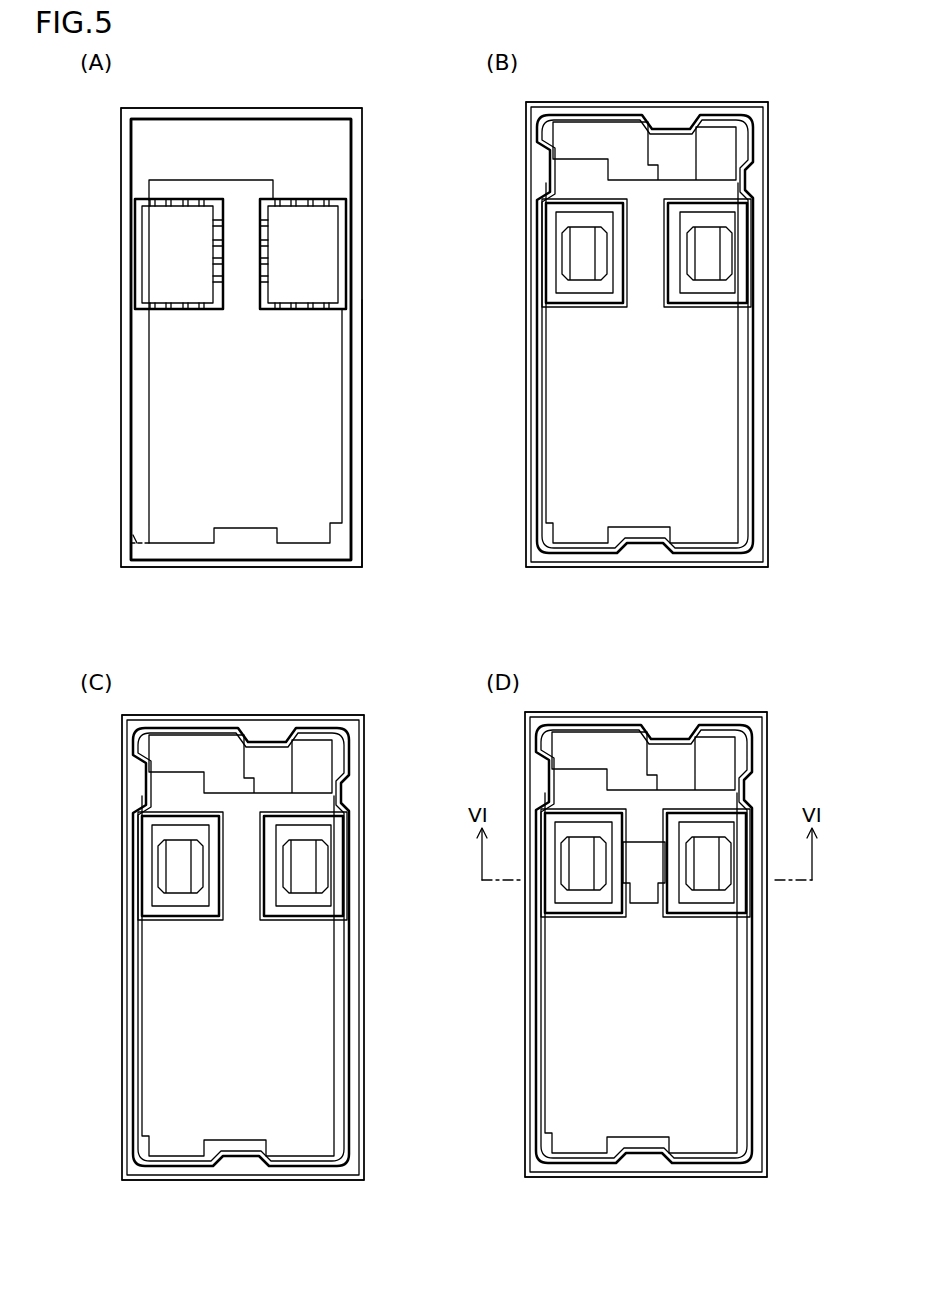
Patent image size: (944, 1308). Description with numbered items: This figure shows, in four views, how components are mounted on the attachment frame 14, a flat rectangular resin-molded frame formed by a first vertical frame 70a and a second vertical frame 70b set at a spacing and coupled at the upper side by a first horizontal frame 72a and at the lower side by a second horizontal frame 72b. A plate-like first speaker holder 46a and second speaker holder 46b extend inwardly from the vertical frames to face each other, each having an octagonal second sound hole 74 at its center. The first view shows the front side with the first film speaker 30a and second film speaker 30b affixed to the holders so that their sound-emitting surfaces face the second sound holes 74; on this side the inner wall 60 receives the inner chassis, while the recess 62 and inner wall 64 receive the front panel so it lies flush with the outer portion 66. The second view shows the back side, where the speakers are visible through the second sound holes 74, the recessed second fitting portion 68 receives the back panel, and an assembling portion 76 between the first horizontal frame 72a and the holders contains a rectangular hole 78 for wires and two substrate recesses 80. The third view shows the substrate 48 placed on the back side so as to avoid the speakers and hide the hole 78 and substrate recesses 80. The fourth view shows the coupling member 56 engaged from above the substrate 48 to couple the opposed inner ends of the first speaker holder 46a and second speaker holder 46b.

The attachment frame 14 is at (161, 97).
The first film speaker 30a is at (438, 595).
The second film speaker 30b is at (278, 289).
The first speaker holder 46a is at (212, 312).
The second speaker holder 46b is at (323, 311).
The substrate 48 is at (188, 372).
The coupling member 56 is at (644, 932).
The inner wall 60 is at (135, 502).
The recess 62 is at (353, 458).
The inner wall 64 is at (151, 544).
The portion 66 is at (357, 485).
The second fitting portion 68 is at (239, 393).
The first vertical frame 70a is at (122, 377).
The second vertical frame 70b is at (360, 422).
The first horizontal frame 72a is at (285, 108).
The second horizontal frame 72b is at (253, 568).
The second sound hole 74 is at (445, 546).
The assembling portion 76 is at (328, 142).
The hole 78 is at (210, 178).
The substrate recess 80 is at (673, 313).